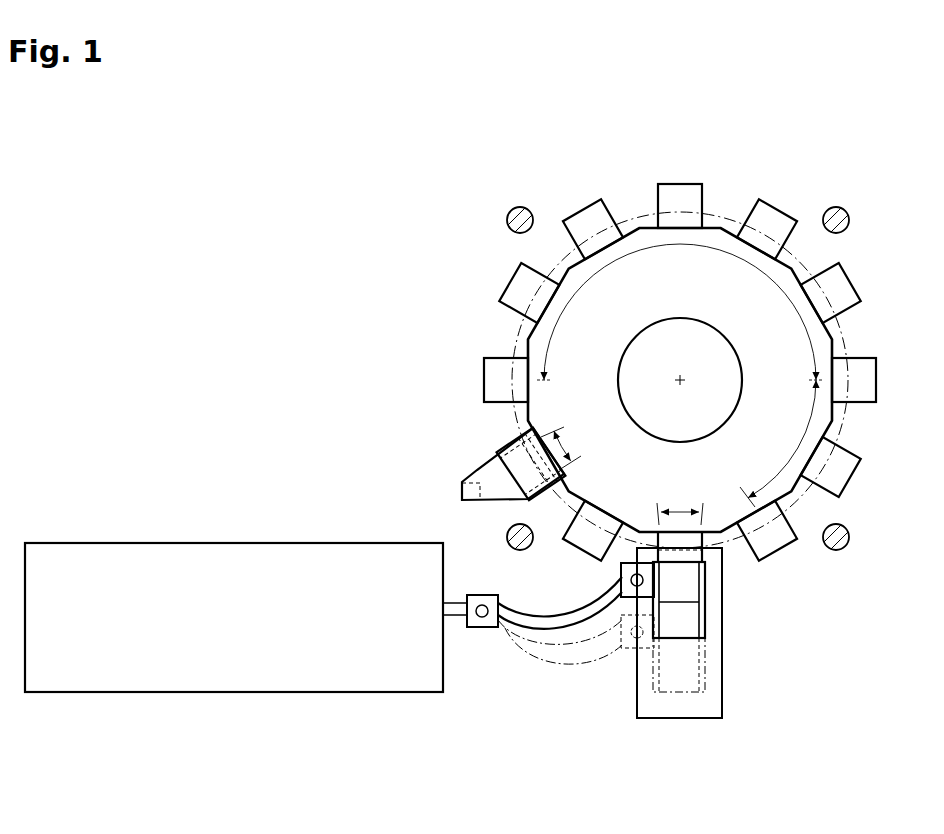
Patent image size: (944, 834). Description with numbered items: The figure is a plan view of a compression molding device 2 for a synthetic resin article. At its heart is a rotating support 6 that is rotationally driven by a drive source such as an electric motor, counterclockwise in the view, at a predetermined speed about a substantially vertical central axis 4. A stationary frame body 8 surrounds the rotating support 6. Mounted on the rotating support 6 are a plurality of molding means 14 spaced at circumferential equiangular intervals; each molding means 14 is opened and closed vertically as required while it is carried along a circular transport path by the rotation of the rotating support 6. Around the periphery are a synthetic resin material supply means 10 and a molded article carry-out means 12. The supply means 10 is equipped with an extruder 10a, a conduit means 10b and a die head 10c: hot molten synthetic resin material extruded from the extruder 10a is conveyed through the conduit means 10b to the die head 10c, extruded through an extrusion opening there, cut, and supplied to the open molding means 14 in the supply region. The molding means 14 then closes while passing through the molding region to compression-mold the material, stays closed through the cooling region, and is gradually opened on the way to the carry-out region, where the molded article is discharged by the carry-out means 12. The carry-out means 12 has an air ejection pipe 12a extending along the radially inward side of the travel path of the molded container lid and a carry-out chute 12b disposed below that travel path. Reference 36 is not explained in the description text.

The compression molding device 2 is at (729, 162).
The central axis 4 is at (677, 385).
The rotating support 6 is at (643, 238).
The stationary frame body 8 is at (675, 389).
The positioning pin 36 is at (514, 209).
The molding means 14 is at (767, 224).
The synthetic resin material supply means 10 is at (517, 676).
The extruder 10a is at (239, 540).
The conduit means 10b is at (553, 634).
The die head 10c is at (708, 592).
The molded article carry-out means 12 is at (495, 512).
The air ejection pipe 12a is at (531, 445).
The carry-out chute 12b is at (477, 468).